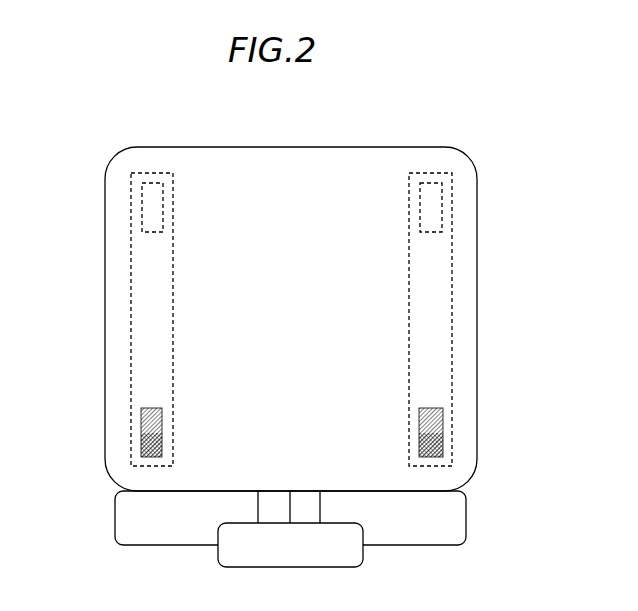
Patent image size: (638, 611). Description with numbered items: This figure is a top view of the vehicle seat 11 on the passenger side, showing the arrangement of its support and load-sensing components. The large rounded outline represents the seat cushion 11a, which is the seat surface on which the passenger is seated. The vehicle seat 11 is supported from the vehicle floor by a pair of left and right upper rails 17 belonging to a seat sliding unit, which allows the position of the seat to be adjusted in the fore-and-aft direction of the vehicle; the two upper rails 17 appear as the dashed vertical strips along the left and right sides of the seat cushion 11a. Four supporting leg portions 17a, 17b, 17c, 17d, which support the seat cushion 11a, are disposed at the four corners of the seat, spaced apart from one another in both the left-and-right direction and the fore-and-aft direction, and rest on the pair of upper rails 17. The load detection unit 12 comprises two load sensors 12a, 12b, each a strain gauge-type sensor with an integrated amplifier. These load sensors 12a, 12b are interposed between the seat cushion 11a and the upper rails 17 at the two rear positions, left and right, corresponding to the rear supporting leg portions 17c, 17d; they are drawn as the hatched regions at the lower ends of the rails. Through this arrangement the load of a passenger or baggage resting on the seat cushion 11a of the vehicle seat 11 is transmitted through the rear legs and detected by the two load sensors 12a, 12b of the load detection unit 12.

The vehicle seat 11 is at (243, 143).
The seat cushion 11a is at (331, 163).
The upper rails 17 is at (142, 307).
The supporting leg portion 17a is at (134, 205).
The supporting leg portion 17b is at (444, 205).
The supporting leg portion 17c is at (136, 447).
The supporting leg portion 17d is at (444, 447).
The load detection unit 12 is at (462, 398).
The load sensor 12a is at (143, 425).
The load sensor 12b is at (442, 422).